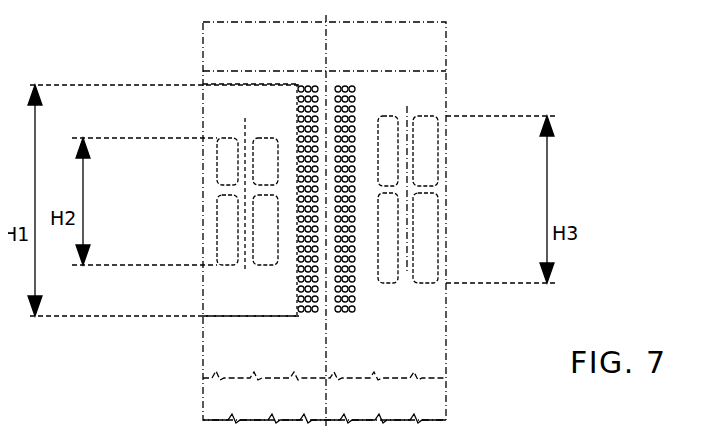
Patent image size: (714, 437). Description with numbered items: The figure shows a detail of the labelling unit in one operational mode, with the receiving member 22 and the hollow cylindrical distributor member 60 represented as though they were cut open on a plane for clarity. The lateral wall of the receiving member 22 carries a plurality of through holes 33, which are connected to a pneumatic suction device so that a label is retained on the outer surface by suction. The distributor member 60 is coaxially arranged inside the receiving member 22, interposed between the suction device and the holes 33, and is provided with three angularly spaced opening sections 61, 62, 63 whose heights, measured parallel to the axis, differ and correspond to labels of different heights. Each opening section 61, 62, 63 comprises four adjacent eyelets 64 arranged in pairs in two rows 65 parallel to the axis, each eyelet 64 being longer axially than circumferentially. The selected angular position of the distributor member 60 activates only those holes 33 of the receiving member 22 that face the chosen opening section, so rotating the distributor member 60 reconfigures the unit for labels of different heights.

The receiving member 22 is at (430, 95).
The through holes 33 is at (338, 88).
The hollow cylindrical distributor member 60 is at (283, 343).
The opening section 61 is at (227, 150).
The opening section 62 is at (297, 107).
The opening section 63 is at (427, 140).
The eyelets 64 is at (277, 152).
The rows 65 is at (306, 85).